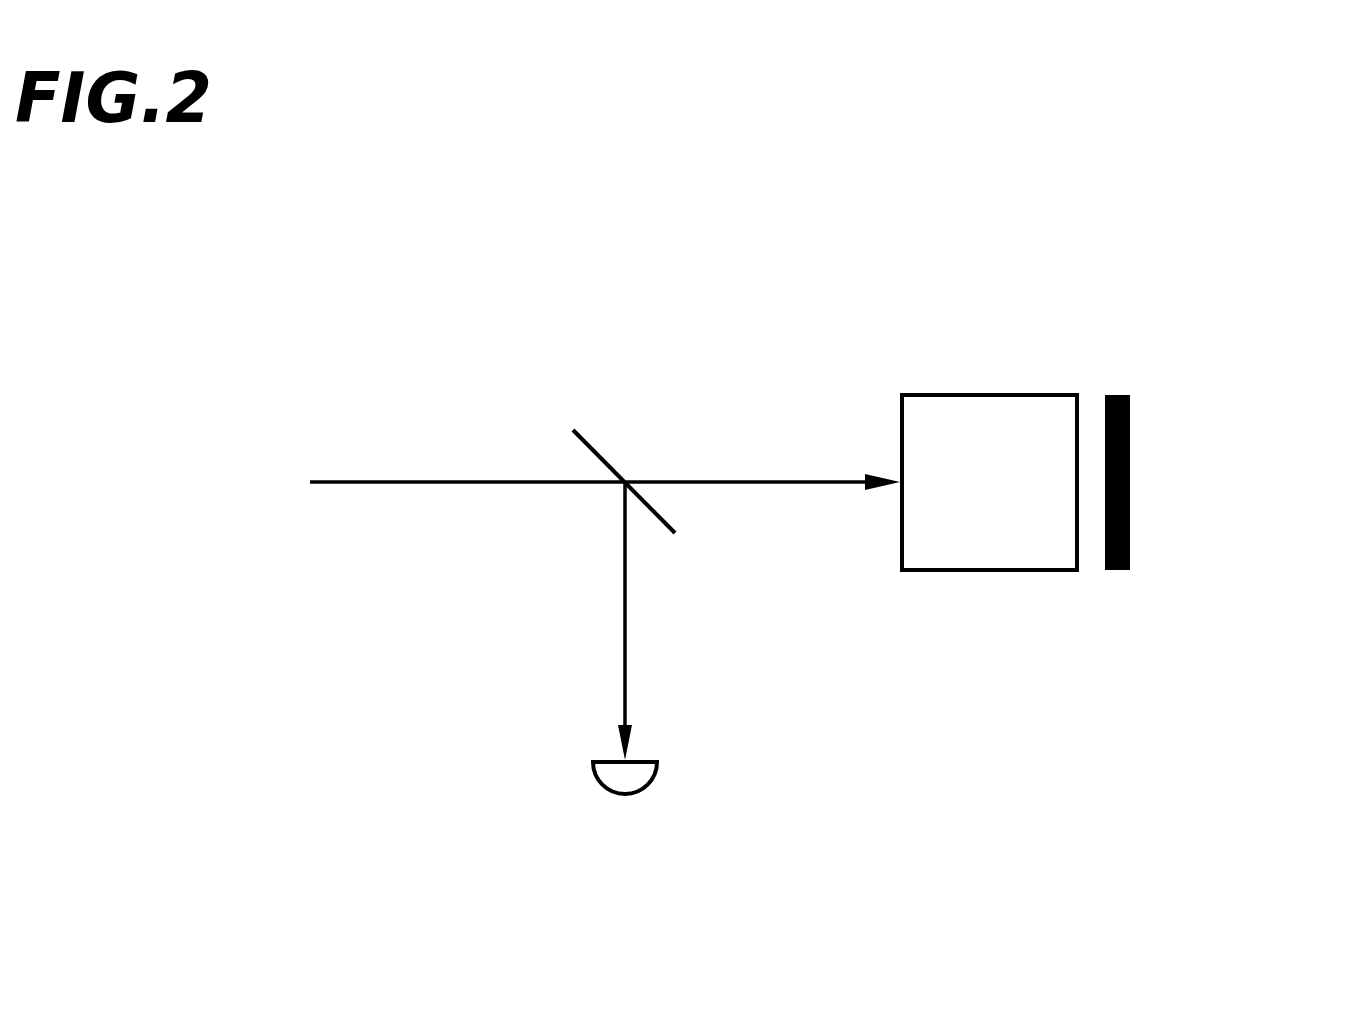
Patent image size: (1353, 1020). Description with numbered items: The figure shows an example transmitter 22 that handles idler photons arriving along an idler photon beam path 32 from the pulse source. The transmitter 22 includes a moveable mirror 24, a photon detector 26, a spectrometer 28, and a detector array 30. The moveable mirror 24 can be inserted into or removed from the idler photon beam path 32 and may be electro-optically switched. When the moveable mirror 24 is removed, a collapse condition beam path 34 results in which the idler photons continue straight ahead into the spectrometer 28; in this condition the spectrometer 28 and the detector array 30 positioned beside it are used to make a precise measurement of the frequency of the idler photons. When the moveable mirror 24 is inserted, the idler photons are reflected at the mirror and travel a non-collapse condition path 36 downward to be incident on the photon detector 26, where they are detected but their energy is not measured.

The transmitter 22 is at (1256, 191).
The moveable mirror 24 is at (600, 450).
The photon detector 26 is at (660, 780).
The spectrometer 28 is at (1008, 497).
The detector array 30 is at (1132, 495).
The idler photon beam path 32 is at (437, 484).
The collapse condition beam path 34 is at (735, 484).
The non-collapse condition path 36 is at (620, 620).